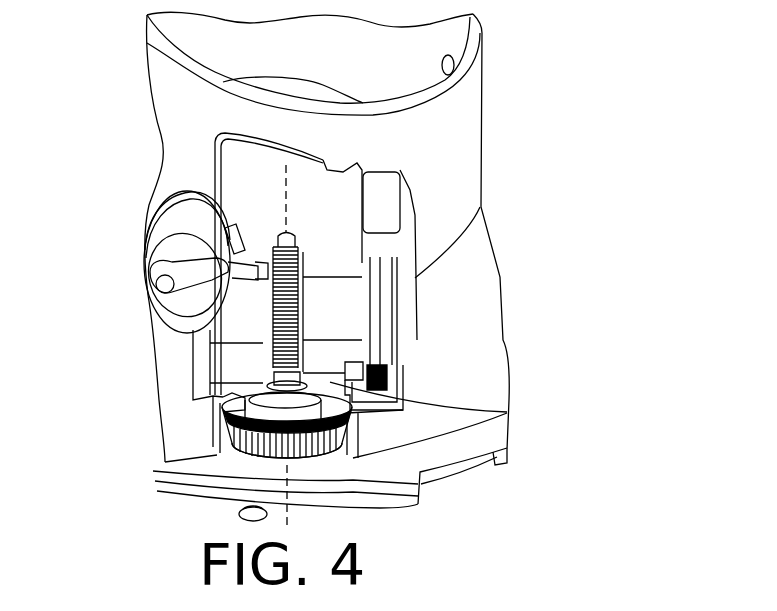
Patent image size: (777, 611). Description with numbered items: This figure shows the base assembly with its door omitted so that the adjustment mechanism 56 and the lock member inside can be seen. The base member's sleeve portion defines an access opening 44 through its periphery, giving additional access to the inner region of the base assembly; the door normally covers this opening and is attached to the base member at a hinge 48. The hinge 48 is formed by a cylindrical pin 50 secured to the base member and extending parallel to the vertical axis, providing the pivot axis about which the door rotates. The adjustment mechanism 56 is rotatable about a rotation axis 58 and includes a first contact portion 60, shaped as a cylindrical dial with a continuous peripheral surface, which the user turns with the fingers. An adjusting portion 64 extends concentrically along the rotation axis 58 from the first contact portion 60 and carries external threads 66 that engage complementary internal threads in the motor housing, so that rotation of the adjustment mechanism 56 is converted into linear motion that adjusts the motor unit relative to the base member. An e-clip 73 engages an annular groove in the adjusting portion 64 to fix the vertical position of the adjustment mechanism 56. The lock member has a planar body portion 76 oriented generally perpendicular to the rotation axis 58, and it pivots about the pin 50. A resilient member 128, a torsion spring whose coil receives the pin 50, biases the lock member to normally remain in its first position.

The access opening 44 is at (355, 160).
The hinge 48 is at (374, 310).
The cylindrical pin 50 is at (378, 350).
The adjustment mechanism 56 is at (224, 447).
The rotation axis 58 is at (283, 200).
The first contact portion 60 is at (340, 437).
The adjusting portion 64 is at (268, 357).
The external threads 66 is at (303, 252).
The e-clip 73 is at (242, 396).
The body portion 76 is at (219, 412).
The resilient member 128 is at (507, 410).